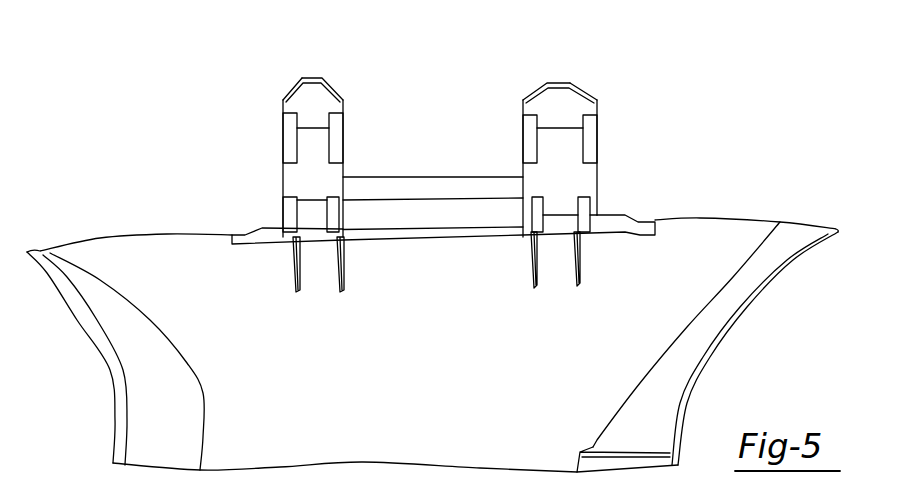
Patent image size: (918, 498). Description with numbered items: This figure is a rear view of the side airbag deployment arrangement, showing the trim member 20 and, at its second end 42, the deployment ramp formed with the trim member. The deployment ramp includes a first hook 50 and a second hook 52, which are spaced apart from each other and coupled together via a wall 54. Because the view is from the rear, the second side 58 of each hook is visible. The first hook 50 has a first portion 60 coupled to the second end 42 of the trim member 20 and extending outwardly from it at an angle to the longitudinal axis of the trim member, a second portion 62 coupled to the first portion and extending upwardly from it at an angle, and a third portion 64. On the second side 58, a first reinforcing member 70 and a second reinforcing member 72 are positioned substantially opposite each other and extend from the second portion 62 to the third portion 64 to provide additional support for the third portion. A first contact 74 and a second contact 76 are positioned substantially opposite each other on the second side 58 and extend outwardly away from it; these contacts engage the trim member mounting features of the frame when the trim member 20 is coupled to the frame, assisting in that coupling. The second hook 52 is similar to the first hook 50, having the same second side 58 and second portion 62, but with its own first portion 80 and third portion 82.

The trim member 20 is at (750, 326).
The second end 42 is at (694, 216).
The first hook 50 is at (607, 87).
The second hook 52 is at (350, 80).
The wall 54 is at (431, 170).
The second side 58 is at (360, 102).
The first portion 60 is at (558, 222).
The second portion 62 is at (282, 170).
The third portion 64 is at (583, 107).
The first reinforcing member 70 is at (290, 136).
The second reinforcing member 72 is at (335, 137).
The first contact 74 is at (284, 214).
The second contact 76 is at (334, 214).
The first portion 80 is at (318, 223).
The third portion 82 is at (290, 102).